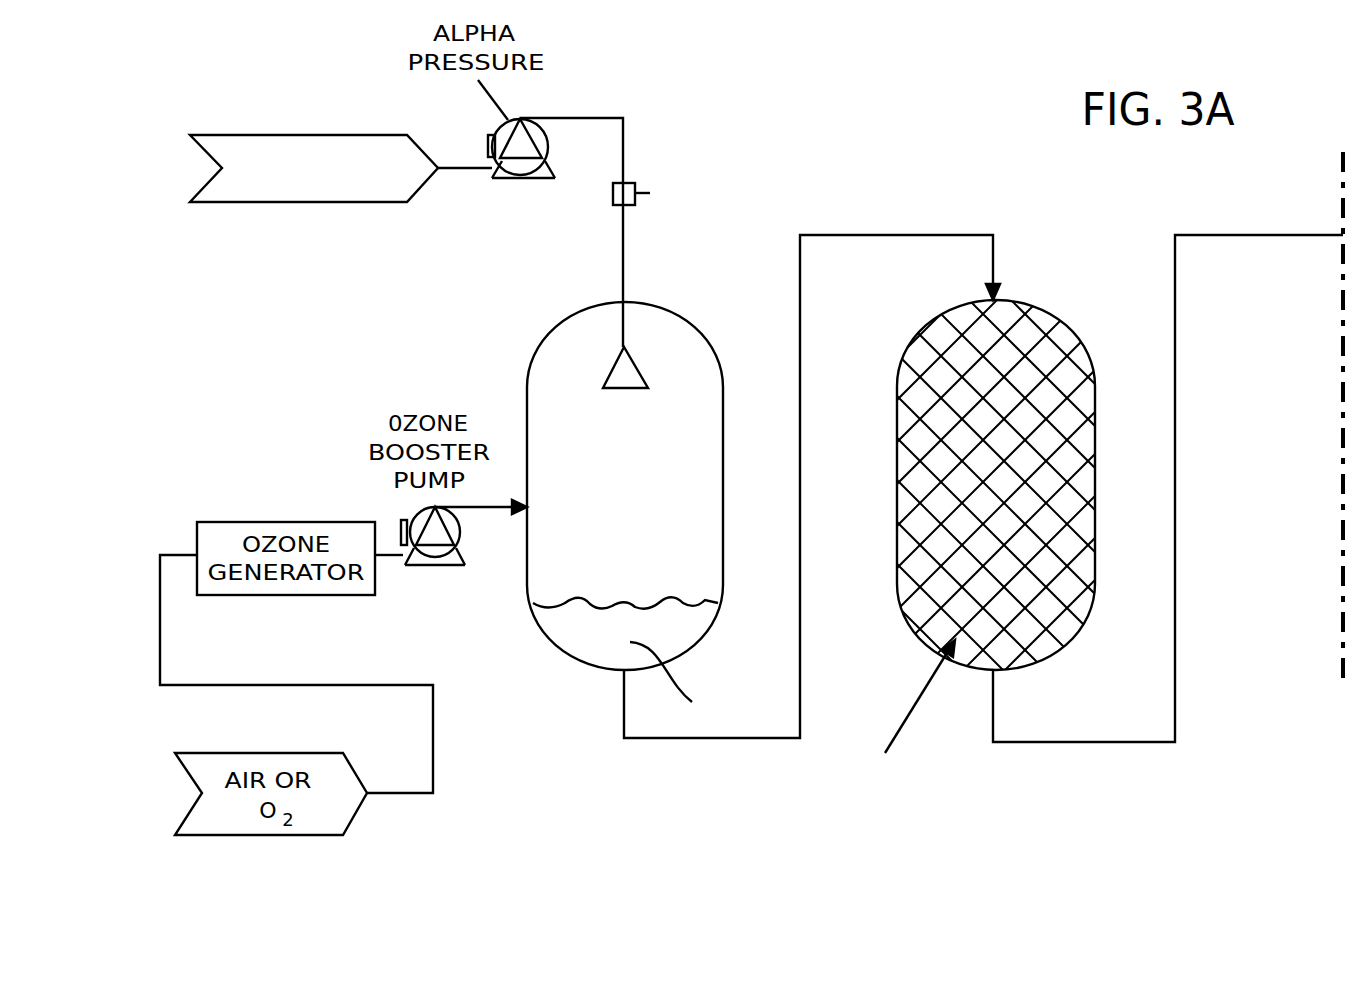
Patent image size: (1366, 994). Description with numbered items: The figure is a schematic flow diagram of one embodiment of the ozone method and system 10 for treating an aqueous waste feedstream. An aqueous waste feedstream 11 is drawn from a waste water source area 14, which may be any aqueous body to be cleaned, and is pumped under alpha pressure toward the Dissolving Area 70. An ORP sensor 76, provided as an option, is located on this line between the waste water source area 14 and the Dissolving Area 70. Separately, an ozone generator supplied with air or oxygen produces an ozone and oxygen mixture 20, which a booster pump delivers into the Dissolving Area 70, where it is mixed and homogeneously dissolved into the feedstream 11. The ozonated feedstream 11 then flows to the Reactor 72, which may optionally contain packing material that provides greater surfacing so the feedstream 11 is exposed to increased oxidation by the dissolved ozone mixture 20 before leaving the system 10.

The ozone method and system 10 is at (953, 172).
The aqueous waste feedstream 11 is at (477, 172).
The waste water source area 14 is at (330, 135).
The ozone mixture 20 is at (507, 520).
The dissolving area 70 is at (583, 435).
The reactor 72 is at (1033, 311).
The ORP sensor 76 is at (646, 178).